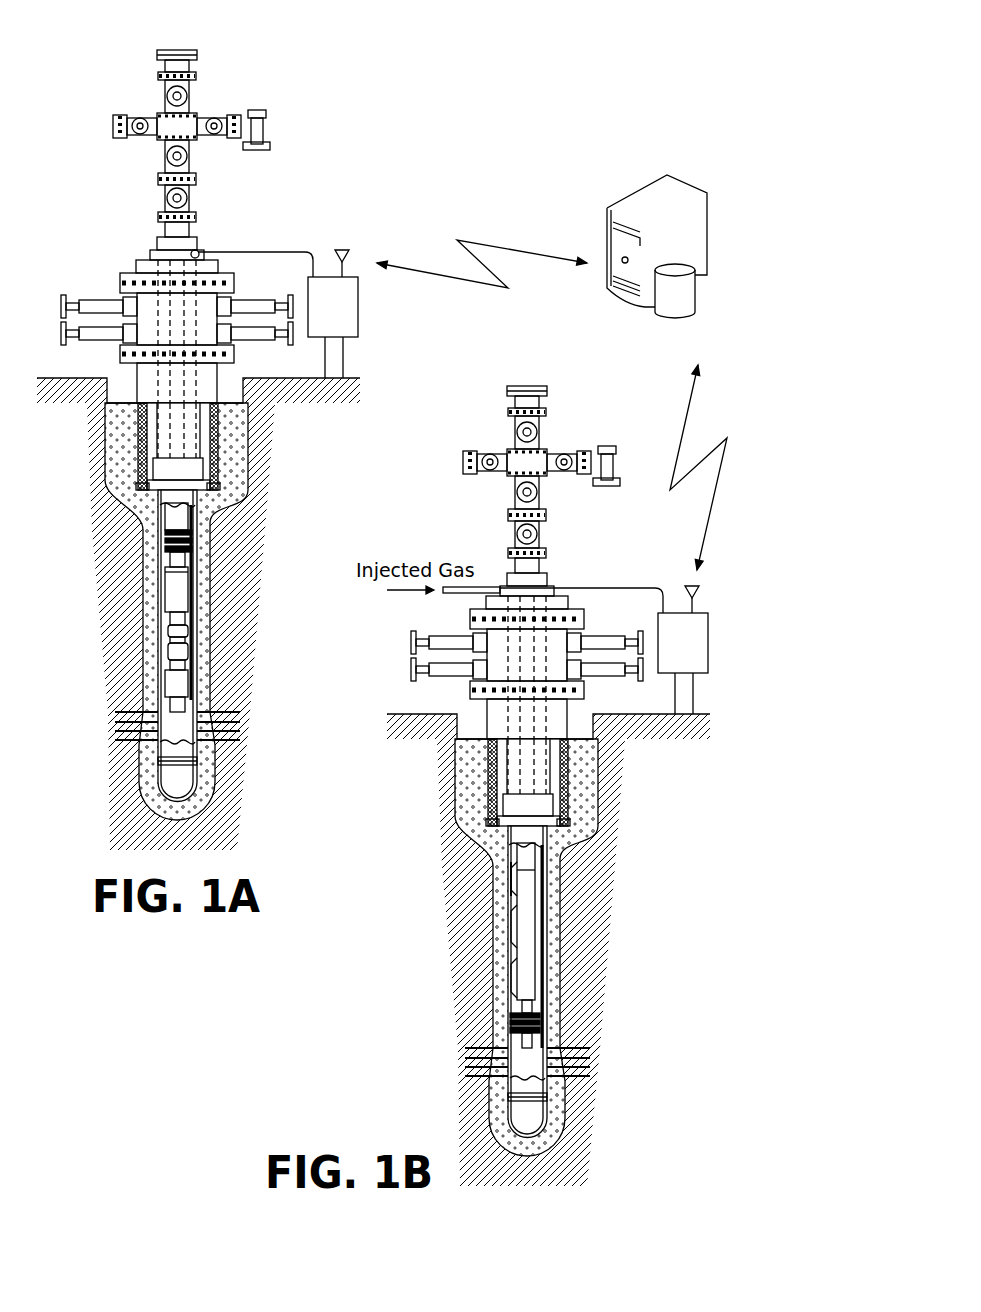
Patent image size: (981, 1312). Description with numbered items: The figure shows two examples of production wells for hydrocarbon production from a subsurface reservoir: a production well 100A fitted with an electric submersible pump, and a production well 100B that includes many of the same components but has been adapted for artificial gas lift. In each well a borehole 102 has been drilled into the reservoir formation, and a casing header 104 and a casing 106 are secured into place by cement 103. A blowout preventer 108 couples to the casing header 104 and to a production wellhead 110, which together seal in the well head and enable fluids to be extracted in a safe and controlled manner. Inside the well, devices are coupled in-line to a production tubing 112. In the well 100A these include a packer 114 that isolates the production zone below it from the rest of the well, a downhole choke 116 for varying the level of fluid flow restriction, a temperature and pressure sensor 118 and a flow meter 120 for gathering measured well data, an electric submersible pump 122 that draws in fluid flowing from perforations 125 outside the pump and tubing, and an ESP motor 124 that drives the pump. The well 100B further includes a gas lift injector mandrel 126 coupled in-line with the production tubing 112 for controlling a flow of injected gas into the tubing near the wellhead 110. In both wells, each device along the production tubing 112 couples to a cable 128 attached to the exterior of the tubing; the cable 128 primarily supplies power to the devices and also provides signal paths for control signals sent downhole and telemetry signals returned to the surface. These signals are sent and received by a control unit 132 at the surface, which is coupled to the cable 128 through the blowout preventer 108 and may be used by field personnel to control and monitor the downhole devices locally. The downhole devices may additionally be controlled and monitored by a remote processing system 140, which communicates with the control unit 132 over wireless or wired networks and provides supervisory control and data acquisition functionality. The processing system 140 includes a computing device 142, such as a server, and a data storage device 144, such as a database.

In FIG. 1A, the production well 100A is at (341, 145).
In FIG. 1B, the production well 100B is at (664, 880).
In FIG. 1A, the borehole 102 is at (102, 418).
In FIG. 1B, the borehole 102 is at (452, 755).
In FIG. 1A, the cement 103 is at (130, 503).
In FIG. 1B, the cement 103 is at (480, 840).
In FIG. 1A, the casing header 104 is at (138, 437).
In FIG. 1B, the casing header 104 is at (488, 774).
In FIG. 1A, the casing 106 is at (160, 595).
In FIG. 1B, the casing 106 is at (512, 945).
In FIG. 1A, the blowout preventer 108 is at (125, 292).
In FIG. 1B, the blowout preventer 108 is at (477, 630).
In FIG. 1A, the production wellhead 110 is at (160, 133).
In FIG. 1B, the production wellhead 110 is at (503, 474).
In FIG. 1A, the production tubing 112 is at (165, 527).
In FIG. 1B, the production tubing 112 is at (515, 862).
In FIG. 1A, the packer 114 is at (172, 582).
In FIG. 1B, the packer 114 is at (510, 1015).
In FIG. 1A, the downhole choke 116 is at (165, 585).
In FIG. 1A, the temperature and pressure sensor 118 is at (168, 628).
In FIG. 1A, the flow meter 120 is at (168, 647).
In FIG. 1A, the electric submersible pump 122 is at (168, 667).
In FIG. 1A, the ESP motor 124 is at (152, 762).
In FIG. 1A, the perforations 125 is at (176, 727).
In FIG. 1B, the perforations 125 is at (525, 1063).
In FIG. 1B, the gas lift injector mandrel 126 is at (515, 905).
In FIG. 1A, the cable 128 is at (275, 252).
In FIG. 1B, the cable 128 is at (625, 587).
In FIG. 1A, the control unit 132 is at (340, 327).
In FIG. 1B, the control unit 132 is at (690, 663).
In FIG. 1A, the remote processing system 140 is at (727, 251).
In FIG. 1A, the computing device 142 is at (693, 190).
In FIG. 1A, the data storage device 144 is at (682, 318).